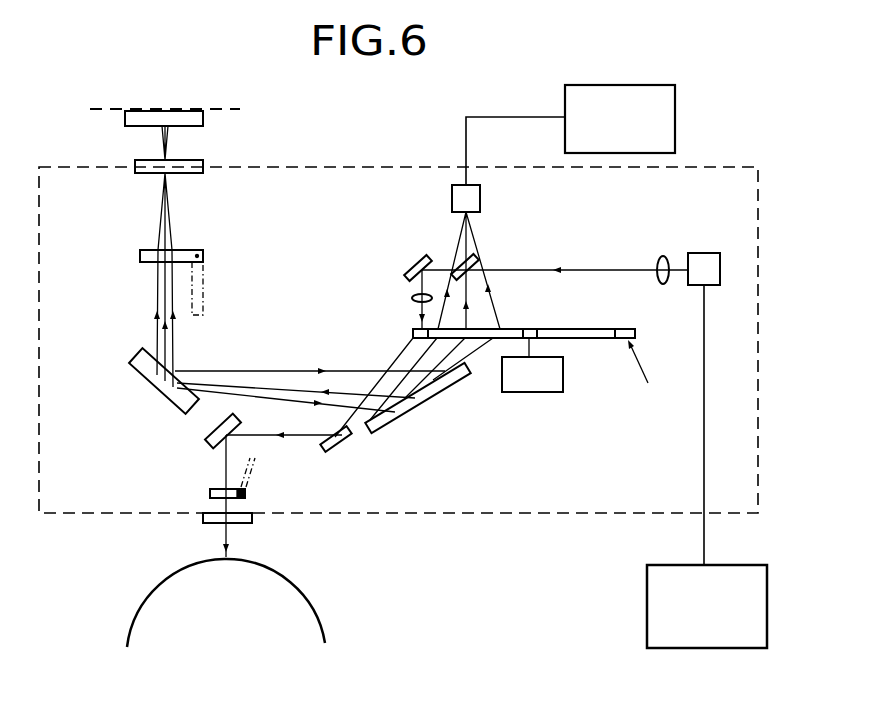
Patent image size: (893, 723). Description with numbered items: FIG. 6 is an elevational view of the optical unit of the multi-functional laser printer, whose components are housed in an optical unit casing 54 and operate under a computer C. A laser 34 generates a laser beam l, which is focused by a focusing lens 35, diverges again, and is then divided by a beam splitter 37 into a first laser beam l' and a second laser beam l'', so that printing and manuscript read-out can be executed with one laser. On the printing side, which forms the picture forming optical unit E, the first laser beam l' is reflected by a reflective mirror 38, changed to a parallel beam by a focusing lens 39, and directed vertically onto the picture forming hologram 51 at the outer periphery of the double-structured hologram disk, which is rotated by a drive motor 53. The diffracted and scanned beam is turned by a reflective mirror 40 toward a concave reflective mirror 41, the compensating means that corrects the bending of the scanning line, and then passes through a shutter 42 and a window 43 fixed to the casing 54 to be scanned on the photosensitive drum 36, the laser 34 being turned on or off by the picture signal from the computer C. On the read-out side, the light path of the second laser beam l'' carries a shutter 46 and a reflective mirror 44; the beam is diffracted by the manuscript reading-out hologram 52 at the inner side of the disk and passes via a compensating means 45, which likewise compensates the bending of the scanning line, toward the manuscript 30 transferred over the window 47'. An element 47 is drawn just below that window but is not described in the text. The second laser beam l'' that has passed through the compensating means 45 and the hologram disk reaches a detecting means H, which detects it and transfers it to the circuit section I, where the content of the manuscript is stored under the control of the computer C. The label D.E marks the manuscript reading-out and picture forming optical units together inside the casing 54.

The manuscript 30 is at (113, 109).
The window 47' is at (116, 127).
The objective lens 47 is at (135, 192).
The shutter 46 is at (141, 254).
The compensating means 45 is at (137, 370).
The reflective mirror 44 is at (408, 405).
The concave reflective mirror 41 is at (203, 436).
The shutter 42 is at (210, 492).
The window 43 is at (203, 517).
The reflective mirror 40 is at (335, 449).
The photosensitive drum 36 is at (137, 607).
The beam splitter 37 is at (462, 259).
The reflective mirror 38 is at (410, 272).
The focusing lens 39 is at (414, 296).
The picture forming hologram 51 is at (414, 333).
The manuscript reading-out hologram 52 is at (598, 338).
The drive motor 53 is at (522, 392).
The laser 34 is at (720, 272).
The focusing lens 35 is at (661, 256).
The optical unit casing 54 is at (767, 440).
The detecting means H is at (458, 185).
The circuit section I is at (675, 110).
The computer C is at (647, 617).
The picture forming optical unit E is at (569, 407).
The manuscript reading-out optical unit and picture forming optical unit D.E is at (767, 243).
The laser beam l is at (555, 246).
The first laser beam l' is at (386, 299).
The second laser beam l'' is at (310, 359).